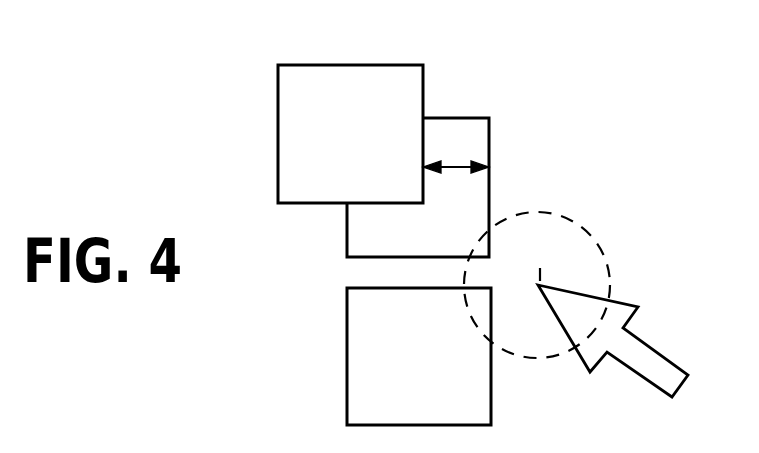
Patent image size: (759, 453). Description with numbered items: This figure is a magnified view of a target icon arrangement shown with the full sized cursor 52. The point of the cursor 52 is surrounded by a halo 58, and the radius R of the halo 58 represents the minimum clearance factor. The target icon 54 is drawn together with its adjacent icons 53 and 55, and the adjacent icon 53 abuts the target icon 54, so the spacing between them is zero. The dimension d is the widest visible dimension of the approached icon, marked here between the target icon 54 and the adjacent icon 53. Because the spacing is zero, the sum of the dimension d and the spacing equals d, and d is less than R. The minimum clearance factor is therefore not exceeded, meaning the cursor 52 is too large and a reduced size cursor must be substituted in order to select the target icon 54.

The cursor 52 is at (615, 313).
The adjacent icon 53 is at (337, 92).
The target icon 54 is at (368, 233).
The adjacent icon 55 is at (393, 371).
The halo 58 is at (598, 248).
The radius of halo R is at (543, 250).
The widest visible dimension of the approached icon d is at (455, 167).